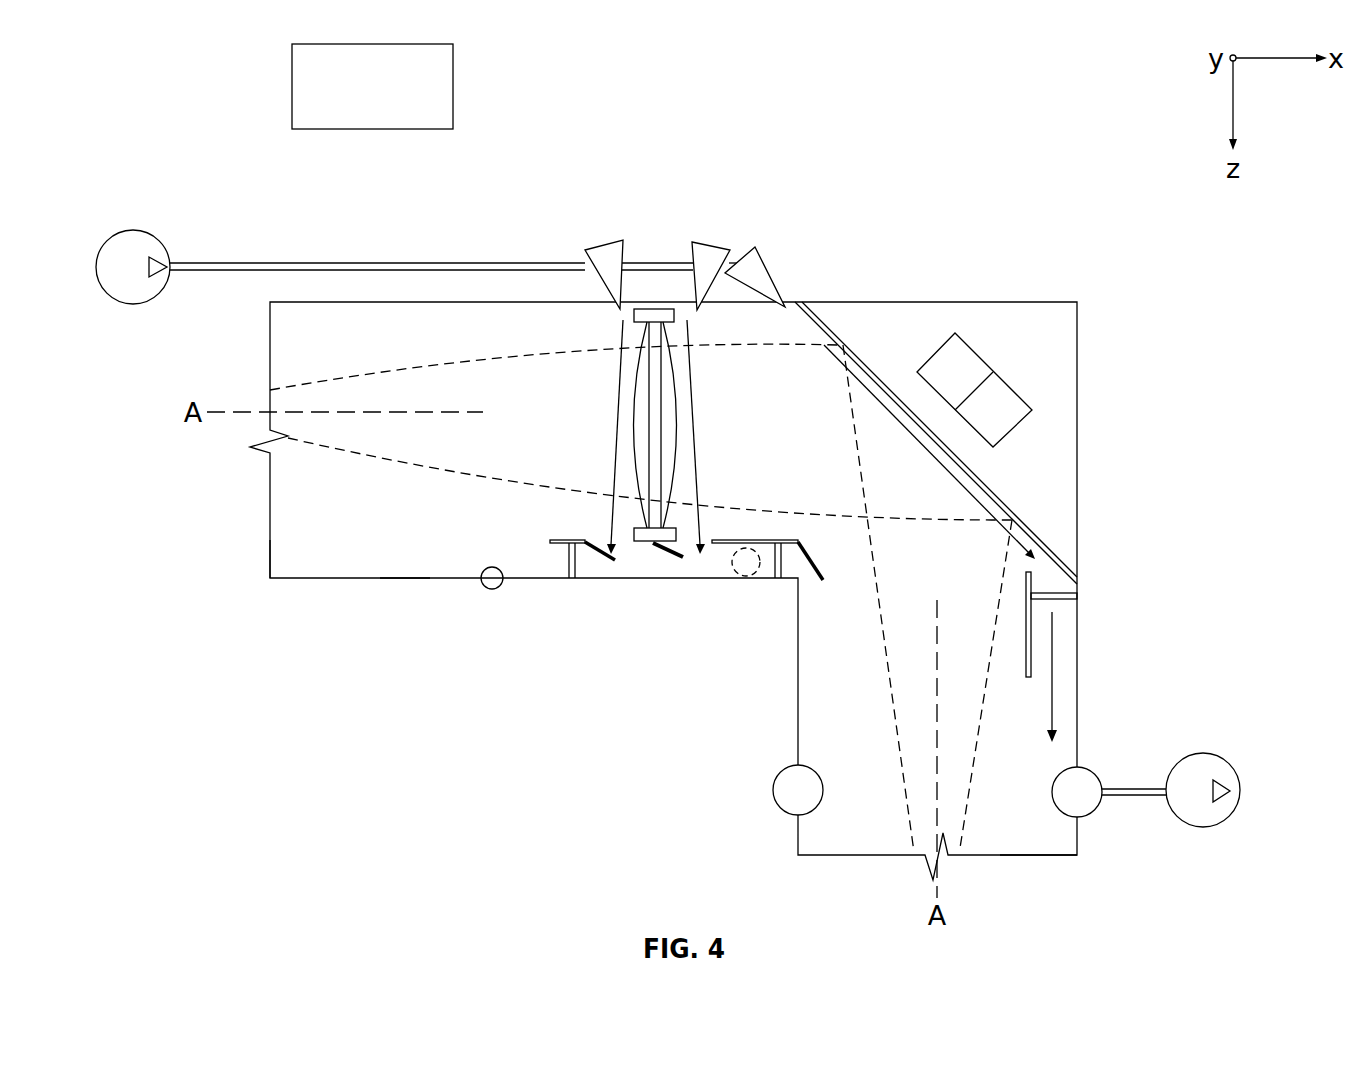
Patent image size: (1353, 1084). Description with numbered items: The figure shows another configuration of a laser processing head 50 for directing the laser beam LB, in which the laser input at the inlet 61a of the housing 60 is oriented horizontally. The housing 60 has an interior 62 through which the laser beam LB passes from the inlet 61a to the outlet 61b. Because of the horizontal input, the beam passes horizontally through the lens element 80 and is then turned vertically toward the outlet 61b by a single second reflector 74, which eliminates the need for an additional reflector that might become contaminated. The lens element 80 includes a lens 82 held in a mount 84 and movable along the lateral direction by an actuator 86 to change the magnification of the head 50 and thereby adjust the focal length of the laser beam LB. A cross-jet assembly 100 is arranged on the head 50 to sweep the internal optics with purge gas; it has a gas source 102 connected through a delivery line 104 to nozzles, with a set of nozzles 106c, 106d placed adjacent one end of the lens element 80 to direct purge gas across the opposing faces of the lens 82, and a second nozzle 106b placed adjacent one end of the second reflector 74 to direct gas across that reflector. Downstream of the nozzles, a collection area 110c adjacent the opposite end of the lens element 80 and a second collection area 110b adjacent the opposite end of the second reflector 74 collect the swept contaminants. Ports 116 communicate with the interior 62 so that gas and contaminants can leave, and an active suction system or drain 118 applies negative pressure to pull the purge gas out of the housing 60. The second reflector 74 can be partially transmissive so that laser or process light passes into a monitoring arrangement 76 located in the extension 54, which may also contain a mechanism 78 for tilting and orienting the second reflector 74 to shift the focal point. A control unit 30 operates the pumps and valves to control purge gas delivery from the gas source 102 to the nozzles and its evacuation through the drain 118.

The cross-jet assembly 100 is at (150, 182).
The laser processing head 50 is at (945, 145).
The control unit 30 is at (357, 129).
The gas source 102 is at (133, 305).
The delivery line 104 is at (272, 263).
The extension 54 is at (1077, 328).
The housing 60 is at (405, 578).
The inlet 61a is at (270, 555).
The outlet 61b is at (1032, 855).
The interior 62 is at (490, 589).
The nozzle 106c is at (612, 240).
The nozzle 106d is at (705, 241).
The second nozzle 106b is at (778, 277).
The lens element 80 is at (647, 292).
The lens 82 is at (668, 415).
The mount 84 is at (663, 527).
The actuator 86 is at (725, 528).
The collection area 110c is at (653, 559).
The second collection area 110b is at (1058, 582).
The port 116 is at (742, 577).
The active suction system or drain 118 is at (1202, 828).
The second reflector 74 is at (1030, 527).
The mechanism 78 is at (972, 348).
The monitoring arrangement 76 is at (1027, 398).
The laser beam LB is at (892, 693).